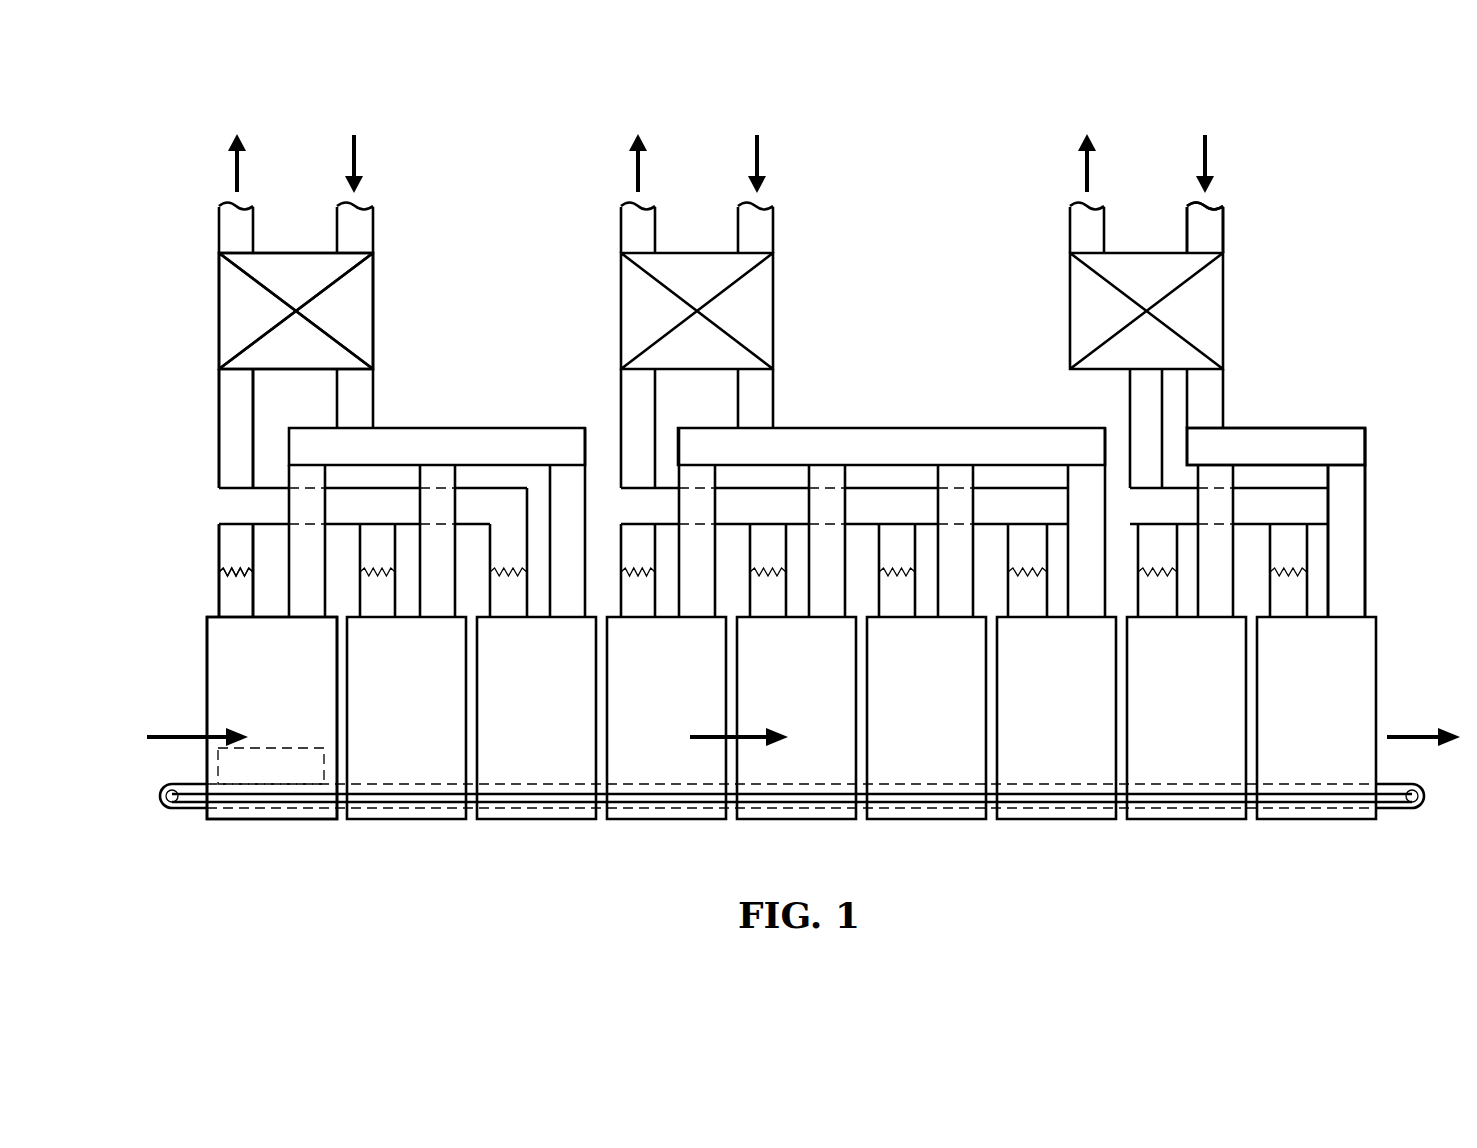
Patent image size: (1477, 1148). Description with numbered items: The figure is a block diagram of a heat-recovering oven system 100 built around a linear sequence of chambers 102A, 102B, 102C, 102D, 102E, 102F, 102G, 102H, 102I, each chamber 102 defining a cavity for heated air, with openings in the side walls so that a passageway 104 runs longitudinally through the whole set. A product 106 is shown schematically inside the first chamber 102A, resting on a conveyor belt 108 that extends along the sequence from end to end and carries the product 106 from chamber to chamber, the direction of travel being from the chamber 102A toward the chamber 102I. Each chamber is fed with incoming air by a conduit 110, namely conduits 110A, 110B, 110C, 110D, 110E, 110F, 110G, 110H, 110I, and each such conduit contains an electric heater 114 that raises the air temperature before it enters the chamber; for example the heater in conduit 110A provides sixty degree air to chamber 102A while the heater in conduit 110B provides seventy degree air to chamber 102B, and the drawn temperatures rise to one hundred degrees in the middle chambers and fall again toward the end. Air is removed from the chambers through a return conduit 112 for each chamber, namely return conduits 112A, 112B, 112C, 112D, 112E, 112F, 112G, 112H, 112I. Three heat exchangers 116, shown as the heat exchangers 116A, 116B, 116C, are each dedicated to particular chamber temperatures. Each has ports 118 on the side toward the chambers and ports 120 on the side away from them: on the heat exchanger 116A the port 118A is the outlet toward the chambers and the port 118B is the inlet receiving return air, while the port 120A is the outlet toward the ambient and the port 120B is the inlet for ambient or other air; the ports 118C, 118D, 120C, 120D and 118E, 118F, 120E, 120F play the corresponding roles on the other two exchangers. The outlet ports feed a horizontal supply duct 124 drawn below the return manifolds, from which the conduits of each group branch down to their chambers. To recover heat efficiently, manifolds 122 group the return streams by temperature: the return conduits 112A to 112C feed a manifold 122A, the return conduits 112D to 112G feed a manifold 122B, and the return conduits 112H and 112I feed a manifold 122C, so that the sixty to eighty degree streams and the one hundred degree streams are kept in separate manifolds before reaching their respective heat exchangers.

The heat-recovering oven system 100 is at (432, 134).
The chamber 102 is at (192, 749).
The chamber 102A is at (268, 822).
The chamber 102B is at (407, 822).
The chamber 102C is at (537, 822).
The chamber 102D is at (643, 822).
The chamber 102E is at (797, 822).
The chamber 102F is at (927, 822).
The chamber 102G is at (1057, 822).
The chamber 102H is at (1187, 822).
The chamber 102I is at (1317, 822).
The passageway 104 is at (172, 732).
The product 106 is at (262, 748).
The conveyor belt 108 is at (180, 812).
The conduit 110 is at (207, 548).
The conduit 110A is at (226, 598).
The conduit 110B is at (377, 612).
The conduit 110C is at (508, 612).
The conduit 110D is at (638, 612).
The conduit 110E is at (768, 612).
The conduit 110F is at (897, 612).
The conduit 110G is at (1027, 612).
The conduit 110H is at (1157, 612).
The conduit 110I is at (1288, 612).
The return conduit 112 is at (1380, 553).
The return conduit 112A is at (307, 612).
The return conduit 112B is at (437, 612).
The return conduit 112C is at (567, 612).
The return conduit 112D is at (697, 612).
The return conduit 112E is at (827, 612).
The return conduit 112F is at (956, 612).
The return conduit 112G is at (1087, 612).
The return conduit 112H is at (1216, 612).
The return conduit 112I is at (1355, 578).
The heater 114 is at (225, 580).
The heat exchanger 116 is at (195, 312).
The heat exchanger 116A is at (374, 312).
The heat exchanger 116B is at (774, 312).
The heat exchanger 116C is at (1224, 312).
The port 118 is at (207, 398).
The port 118A is at (226, 434).
The port 118B is at (365, 398).
The port 118C is at (627, 410).
The port 118D is at (766, 398).
The port 118E is at (1137, 410).
The port 118F is at (1226, 398).
The port 120 is at (1245, 200).
The port 120A is at (226, 228).
The port 120B is at (366, 228).
The port 120C is at (627, 228).
The port 120D is at (766, 228).
The port 120E is at (1078, 228).
The port 120F is at (1226, 232).
The manifold 122 is at (1380, 446).
The manifold 122A is at (478, 435).
The manifold 122B is at (950, 432).
The manifold 122C is at (1347, 432).
The supply manifold 124 is at (207, 498).